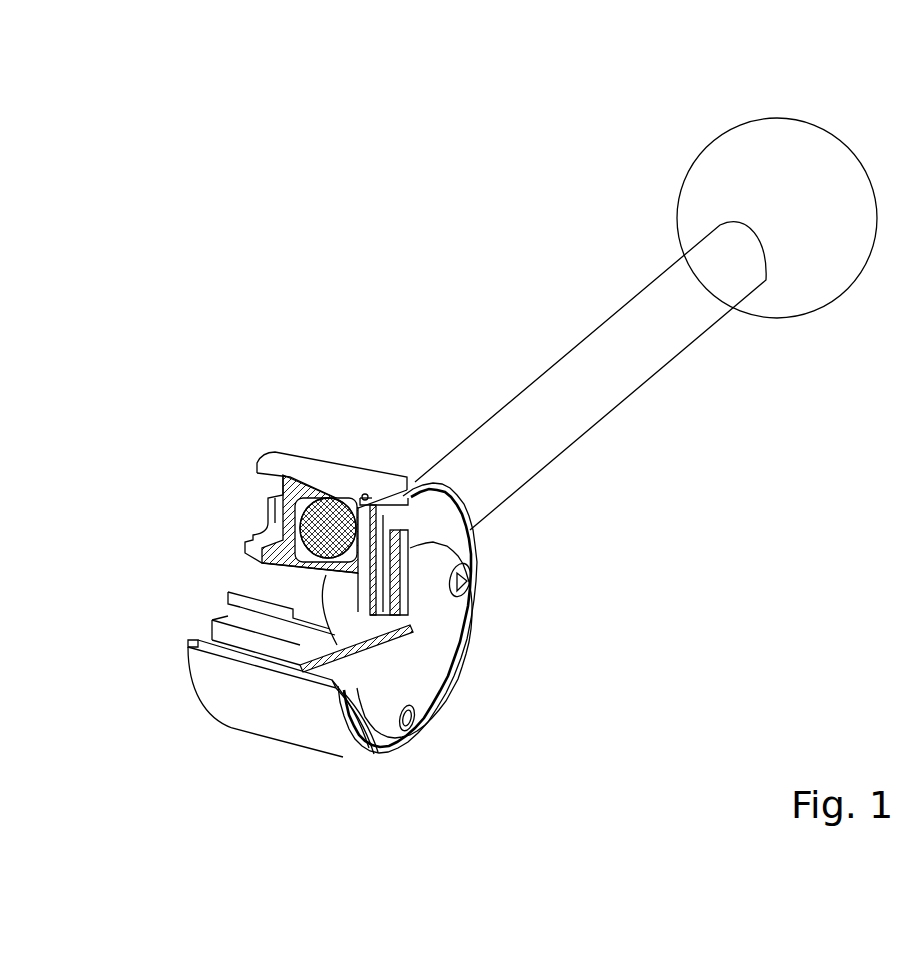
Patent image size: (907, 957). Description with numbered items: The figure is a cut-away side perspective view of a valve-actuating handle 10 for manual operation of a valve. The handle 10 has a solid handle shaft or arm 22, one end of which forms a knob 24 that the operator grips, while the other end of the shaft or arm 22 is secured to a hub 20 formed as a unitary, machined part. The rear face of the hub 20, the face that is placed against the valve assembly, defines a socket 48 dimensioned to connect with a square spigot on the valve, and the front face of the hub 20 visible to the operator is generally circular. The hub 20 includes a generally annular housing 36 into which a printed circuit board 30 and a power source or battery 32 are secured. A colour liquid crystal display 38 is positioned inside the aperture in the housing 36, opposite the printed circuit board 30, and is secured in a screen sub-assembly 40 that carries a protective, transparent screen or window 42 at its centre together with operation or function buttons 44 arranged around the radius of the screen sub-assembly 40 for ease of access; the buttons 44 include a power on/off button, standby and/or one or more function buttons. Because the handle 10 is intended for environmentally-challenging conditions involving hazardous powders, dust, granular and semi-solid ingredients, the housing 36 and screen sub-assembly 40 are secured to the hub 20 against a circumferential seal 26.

The valve-actuating handle 10 is at (256, 199).
The hub 20 is at (220, 702).
The handle shaft or arm 22 is at (557, 383).
The knob 24 is at (724, 170).
The circumferential seal 26 is at (365, 494).
The printed circuit board 30 is at (377, 523).
The power source or battery 32 is at (332, 532).
The housing 36 is at (333, 728).
The colour liquid crystal display 38 is at (373, 645).
The screen sub-assembly 40 is at (375, 728).
The protective transparent screen or window 42 is at (430, 641).
The operation or function buttons 44 is at (466, 589).
The socket 48 is at (283, 582).